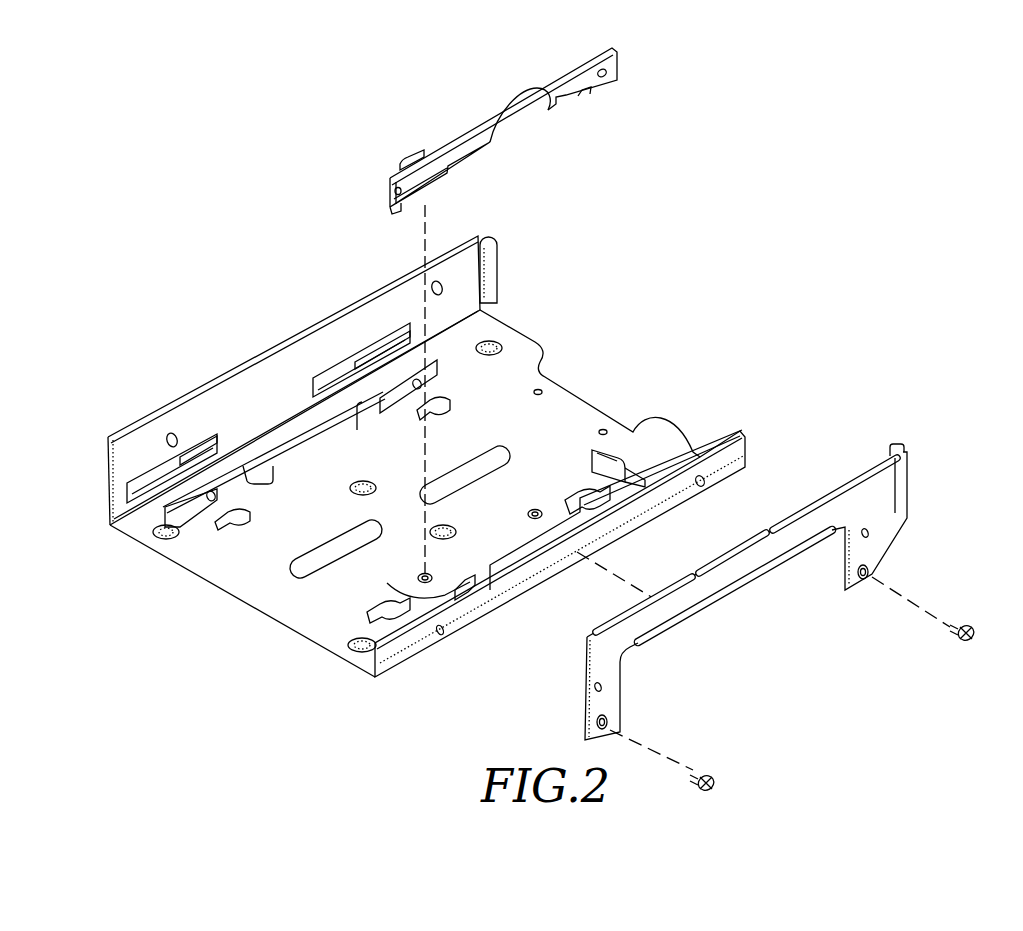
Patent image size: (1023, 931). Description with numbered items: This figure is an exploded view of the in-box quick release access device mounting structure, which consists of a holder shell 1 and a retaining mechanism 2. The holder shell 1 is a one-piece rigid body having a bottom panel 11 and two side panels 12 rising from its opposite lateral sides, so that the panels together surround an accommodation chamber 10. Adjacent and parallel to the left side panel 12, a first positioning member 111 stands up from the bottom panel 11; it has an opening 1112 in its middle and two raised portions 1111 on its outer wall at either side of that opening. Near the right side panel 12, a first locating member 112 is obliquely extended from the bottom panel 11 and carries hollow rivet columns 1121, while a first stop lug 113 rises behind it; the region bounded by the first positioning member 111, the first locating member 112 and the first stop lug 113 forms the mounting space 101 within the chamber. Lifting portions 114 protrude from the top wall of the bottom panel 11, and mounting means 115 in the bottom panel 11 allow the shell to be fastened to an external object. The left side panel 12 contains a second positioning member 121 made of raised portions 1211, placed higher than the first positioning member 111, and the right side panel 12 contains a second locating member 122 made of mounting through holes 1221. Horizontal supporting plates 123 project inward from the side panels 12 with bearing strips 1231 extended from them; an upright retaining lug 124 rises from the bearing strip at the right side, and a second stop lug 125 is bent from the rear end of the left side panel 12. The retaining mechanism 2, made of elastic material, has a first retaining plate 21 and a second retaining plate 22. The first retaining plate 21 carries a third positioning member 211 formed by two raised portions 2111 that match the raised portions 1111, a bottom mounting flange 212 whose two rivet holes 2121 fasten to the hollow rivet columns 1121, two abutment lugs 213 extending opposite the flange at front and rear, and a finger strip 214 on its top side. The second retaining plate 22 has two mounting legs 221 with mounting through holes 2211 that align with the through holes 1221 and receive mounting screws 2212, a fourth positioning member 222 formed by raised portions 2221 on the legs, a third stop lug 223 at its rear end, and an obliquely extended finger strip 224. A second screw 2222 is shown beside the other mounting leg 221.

The holder shell 1 is at (236, 665).
The accommodation chamber 10 is at (372, 322).
The bottom panel 11 is at (285, 610).
The mounting space 101 is at (255, 568).
The first positioning member 111 is at (157, 537).
The raised portions 1111 is at (190, 512).
The opening 1112 is at (383, 388).
The first locating member 112 is at (465, 593).
The hollow rivet columns 1121 is at (430, 583).
The first stop lug 113 is at (607, 465).
The lifting portions 114 is at (583, 483).
The mounting means 115 is at (350, 650).
The side panels 12 is at (238, 382).
The second positioning member 121 is at (148, 433).
The raised portions 1211 is at (167, 437).
The second locating member 122 is at (720, 466).
The mounting through holes 1221 is at (707, 481).
The horizontal supporting plates 123 is at (147, 477).
The bearing strips 1231 is at (200, 450).
The upright retaining lug 124 is at (467, 582).
The second stop lug 125 is at (488, 268).
The retaining mechanism 2 is at (640, 69).
The first retaining plate 21 is at (587, 90).
The third positioning member 211 is at (370, 184).
The raised portions 2111 is at (390, 197).
The bottom mounting flange 212 is at (473, 127).
The rivet holes 2121 is at (418, 160).
The abutment lugs 213 is at (398, 213).
The finger strip 214 is at (520, 127).
The second retaining plate 22 is at (780, 595).
The mounting legs 221 is at (610, 693).
The mounting through holes 2211 is at (607, 725).
The mounting screws 2212 is at (715, 776).
The fourth positioning member 222 is at (892, 530).
The raised portions 2221 is at (870, 533).
The screw 2222 is at (963, 633).
The third stop lug 223 is at (895, 447).
The finger strip 224 is at (725, 552).